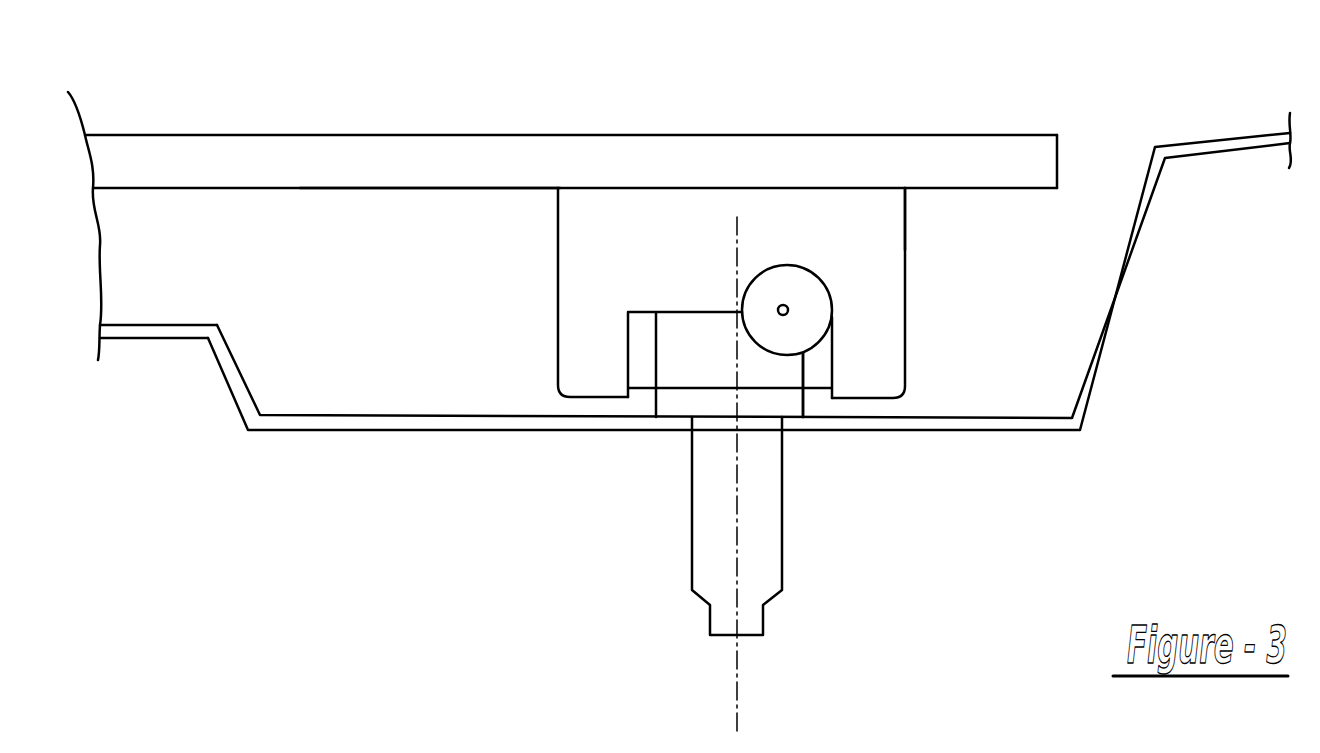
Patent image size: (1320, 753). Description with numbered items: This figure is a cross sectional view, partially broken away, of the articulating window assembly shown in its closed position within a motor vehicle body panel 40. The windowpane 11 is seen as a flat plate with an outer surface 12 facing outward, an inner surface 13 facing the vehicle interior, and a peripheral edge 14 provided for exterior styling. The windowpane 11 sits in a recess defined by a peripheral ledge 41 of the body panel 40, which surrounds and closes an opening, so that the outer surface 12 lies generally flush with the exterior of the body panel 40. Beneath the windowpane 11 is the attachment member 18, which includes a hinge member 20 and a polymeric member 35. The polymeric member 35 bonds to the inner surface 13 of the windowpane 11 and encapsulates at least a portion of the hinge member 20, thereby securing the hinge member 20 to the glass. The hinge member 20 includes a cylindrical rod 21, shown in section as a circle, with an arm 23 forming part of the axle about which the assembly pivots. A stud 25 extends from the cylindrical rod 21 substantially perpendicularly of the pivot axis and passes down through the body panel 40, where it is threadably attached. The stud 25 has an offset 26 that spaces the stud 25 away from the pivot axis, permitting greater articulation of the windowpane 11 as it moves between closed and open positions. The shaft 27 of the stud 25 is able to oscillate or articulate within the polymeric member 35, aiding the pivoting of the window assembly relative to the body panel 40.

The windowpane 11 is at (170, 188).
The outer surface 12 is at (247, 135).
The inner surface 13 is at (340, 188).
The peripheral edge 14 is at (1057, 163).
The attachment member 18 is at (944, 308).
The hinge member 20 is at (714, 476).
The cylindrical rod 21 is at (826, 283).
The arm 23 is at (789, 313).
The stud 25 is at (614, 556).
The offset 26 is at (642, 388).
The shaft 27 is at (802, 353).
The polymeric member 35 is at (558, 392).
The motor vehicle body panel 40 is at (172, 340).
The peripheral ledge 41 is at (250, 382).